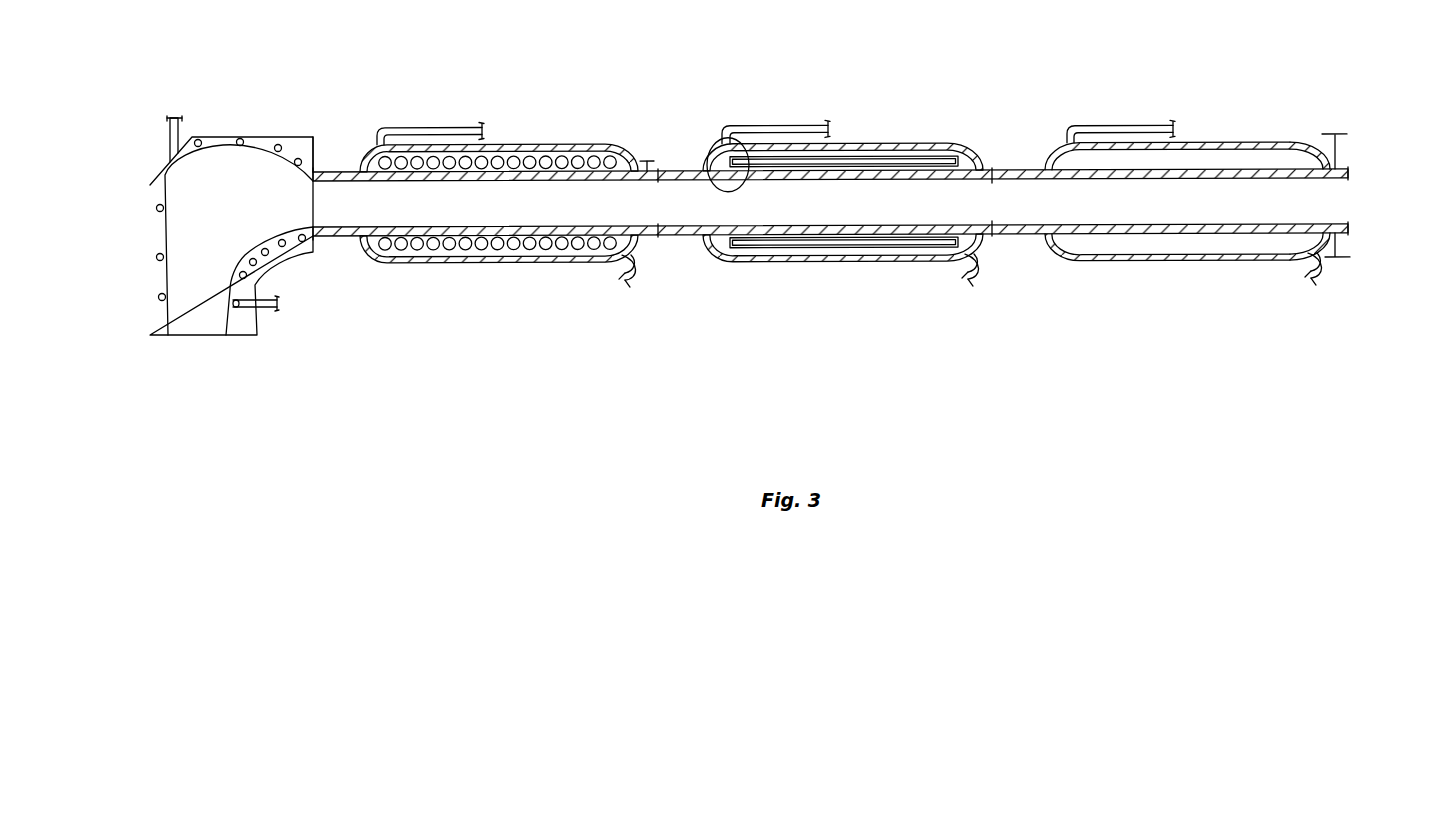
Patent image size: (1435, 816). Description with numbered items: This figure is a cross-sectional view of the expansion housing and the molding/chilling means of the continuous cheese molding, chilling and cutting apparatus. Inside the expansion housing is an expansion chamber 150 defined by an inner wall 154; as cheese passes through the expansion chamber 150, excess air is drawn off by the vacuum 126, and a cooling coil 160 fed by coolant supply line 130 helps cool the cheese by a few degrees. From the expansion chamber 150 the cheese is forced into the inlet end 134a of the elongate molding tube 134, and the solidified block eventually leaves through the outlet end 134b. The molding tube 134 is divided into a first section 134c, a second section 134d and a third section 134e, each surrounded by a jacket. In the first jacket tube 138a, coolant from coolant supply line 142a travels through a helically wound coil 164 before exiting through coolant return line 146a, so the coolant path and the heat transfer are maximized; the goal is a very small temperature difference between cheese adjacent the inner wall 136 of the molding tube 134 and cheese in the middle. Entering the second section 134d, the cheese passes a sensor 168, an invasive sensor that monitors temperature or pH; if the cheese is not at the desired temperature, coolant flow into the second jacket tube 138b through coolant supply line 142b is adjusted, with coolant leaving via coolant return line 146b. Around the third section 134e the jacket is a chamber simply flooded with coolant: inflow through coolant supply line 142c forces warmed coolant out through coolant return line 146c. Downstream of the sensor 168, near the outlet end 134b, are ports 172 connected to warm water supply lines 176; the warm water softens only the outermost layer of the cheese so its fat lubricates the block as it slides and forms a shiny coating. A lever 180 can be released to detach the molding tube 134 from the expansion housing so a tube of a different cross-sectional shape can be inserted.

The vacuum 126 is at (168, 137).
The coolant supply line 130 is at (265, 312).
The elongate molding tube 134 is at (678, 170).
The inlet end 134a is at (320, 170).
The outlet end 134b is at (1347, 167).
The first section 134c is at (505, 167).
The second section 134d is at (858, 147).
The third section 134e is at (1187, 194).
The inner wall 136 is at (748, 142).
The first jacket tube 138a is at (530, 160).
The second jacket tube 138b is at (893, 155).
The coolant supply line 142a is at (637, 263).
The coolant supply line 142b is at (985, 265).
The coolant supply line 142c is at (1323, 267).
The coolant return line 146a is at (427, 127).
The coolant return line 146b is at (785, 123).
The coolant return line 146c is at (1117, 125).
The expansion chamber 150 is at (218, 182).
The inner wall 154 is at (257, 145).
The cooling coil 160 is at (162, 297).
The helically wound coil 164 is at (581, 160).
The sensor 168 is at (647, 161).
The ports 172 is at (1297, 157).
The warm water supply lines 176 is at (1345, 140).
The lever 180 is at (317, 173).